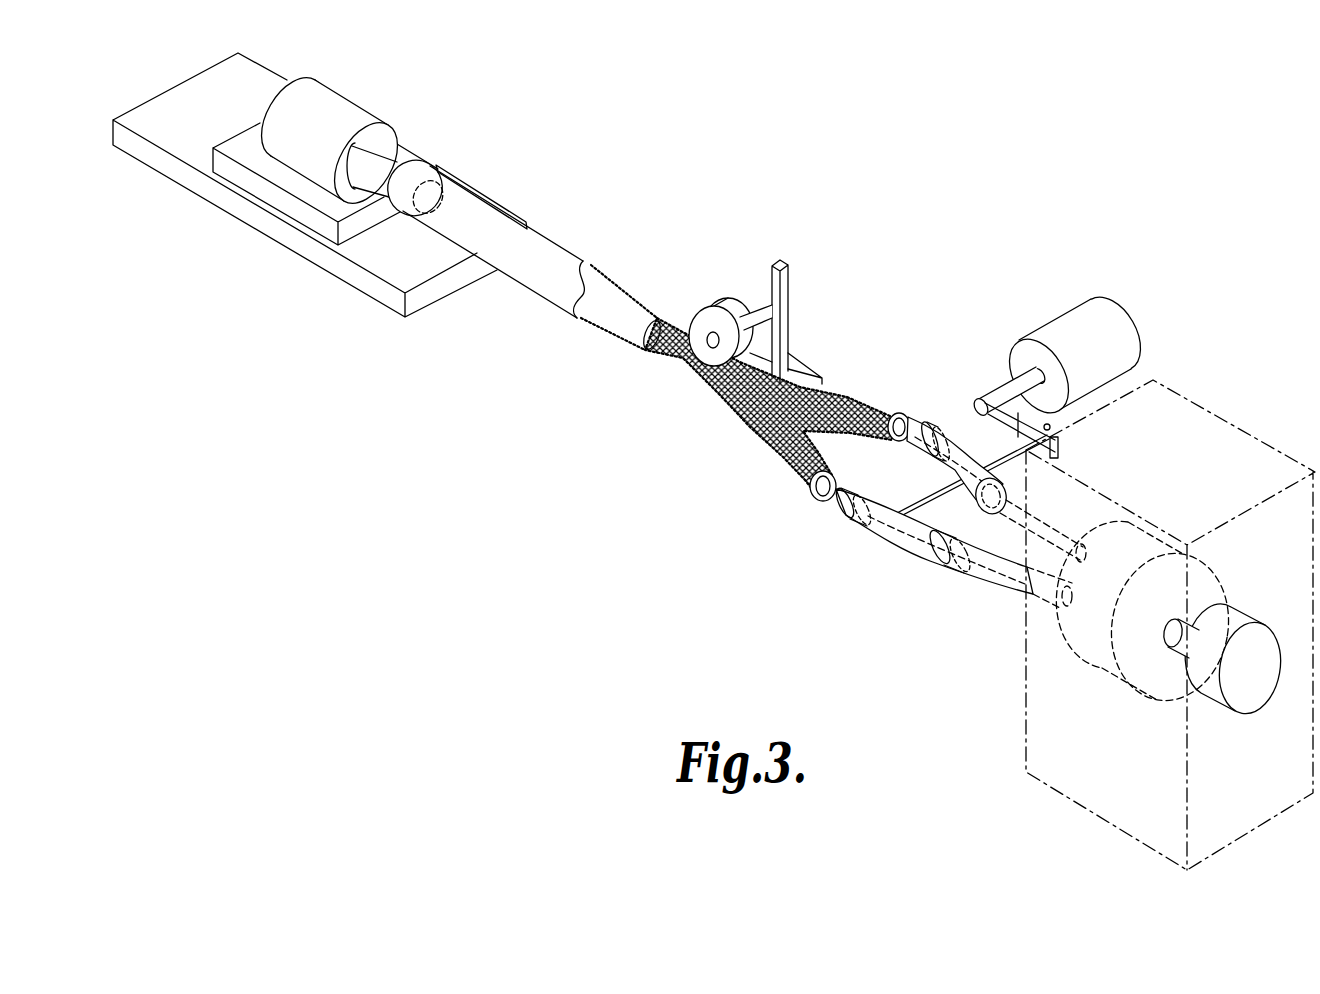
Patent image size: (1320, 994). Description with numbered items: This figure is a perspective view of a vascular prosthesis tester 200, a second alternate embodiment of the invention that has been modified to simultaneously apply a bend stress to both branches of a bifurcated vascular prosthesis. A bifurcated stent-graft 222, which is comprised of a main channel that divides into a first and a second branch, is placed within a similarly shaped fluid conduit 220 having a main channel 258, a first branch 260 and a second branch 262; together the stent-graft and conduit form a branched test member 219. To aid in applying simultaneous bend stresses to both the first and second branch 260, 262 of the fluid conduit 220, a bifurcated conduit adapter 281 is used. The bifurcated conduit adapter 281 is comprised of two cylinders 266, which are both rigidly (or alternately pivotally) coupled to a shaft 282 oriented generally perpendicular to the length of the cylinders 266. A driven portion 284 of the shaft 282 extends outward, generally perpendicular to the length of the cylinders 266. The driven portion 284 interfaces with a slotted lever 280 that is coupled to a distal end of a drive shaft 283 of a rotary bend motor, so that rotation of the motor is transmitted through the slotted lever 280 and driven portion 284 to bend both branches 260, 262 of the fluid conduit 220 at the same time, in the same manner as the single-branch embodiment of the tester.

The vascular prosthesis tester 200 is at (1092, 128).
The branched test member 219 is at (665, 371).
The fluid conduit 220 is at (455, 181).
The bifurcated stent-graft 222 is at (565, 283).
The main channel 258 is at (507, 276).
The first branch 260 is at (806, 500).
The second branch 262 is at (905, 414).
The cylinders 266 is at (960, 456).
The slotted lever 280 is at (1060, 437).
The bifurcated conduit adapter 281 is at (902, 560).
The shaft 282 is at (925, 495).
The drive shaft 283 is at (1017, 340).
The driven portion 284 is at (1015, 422).